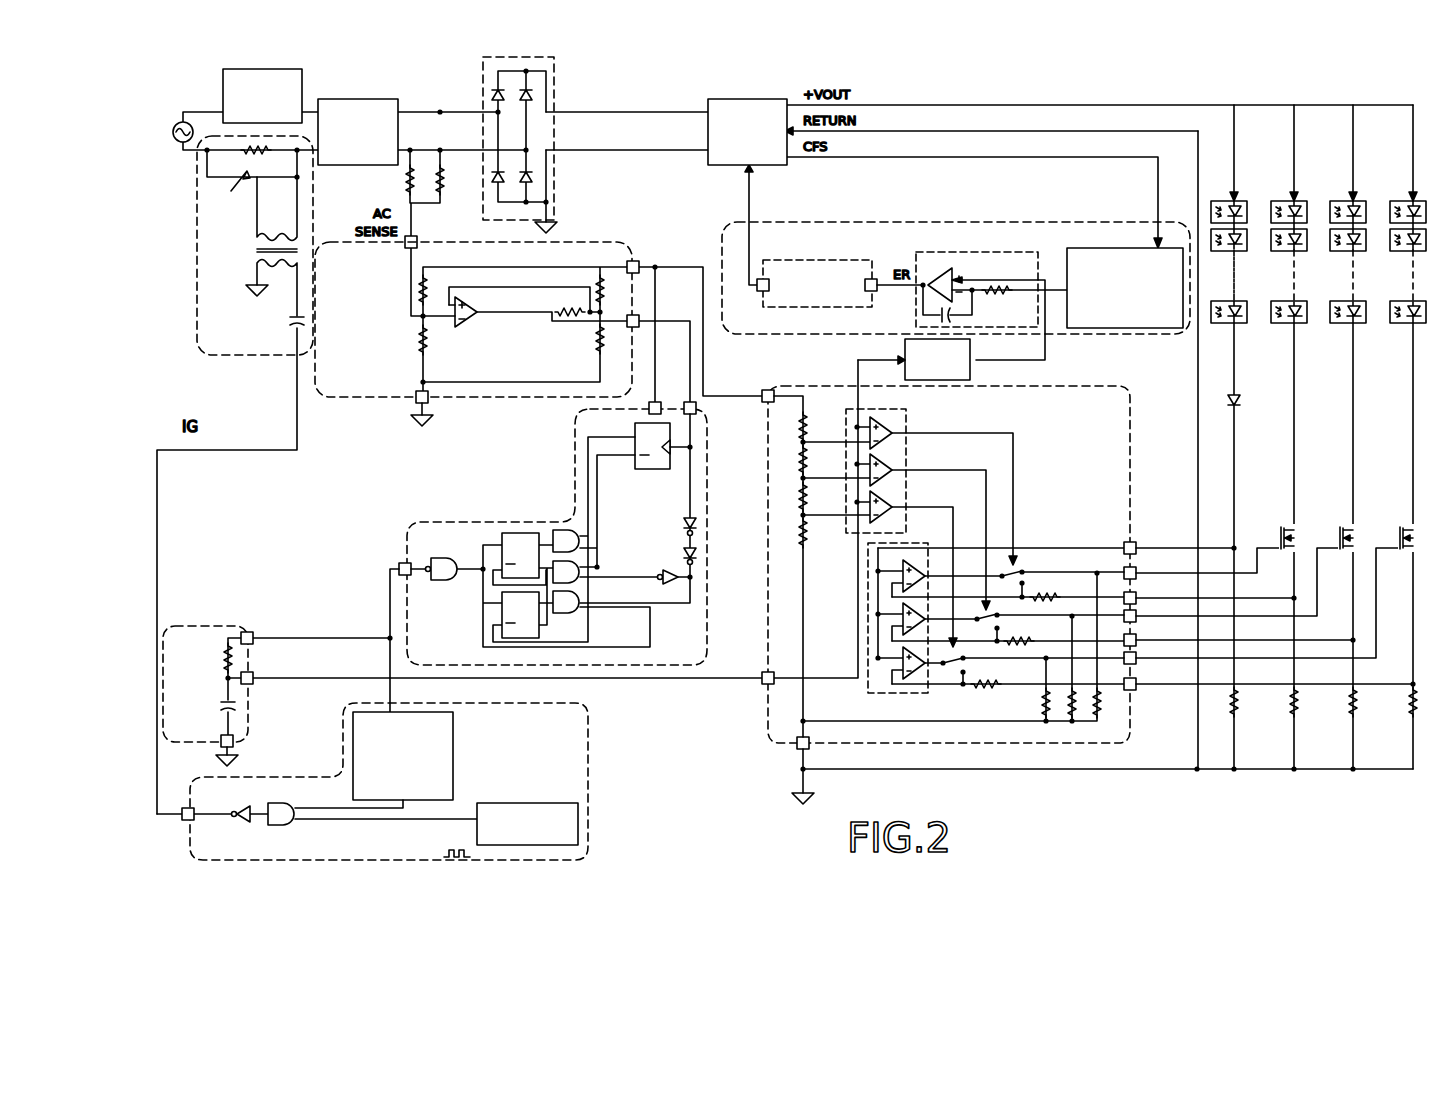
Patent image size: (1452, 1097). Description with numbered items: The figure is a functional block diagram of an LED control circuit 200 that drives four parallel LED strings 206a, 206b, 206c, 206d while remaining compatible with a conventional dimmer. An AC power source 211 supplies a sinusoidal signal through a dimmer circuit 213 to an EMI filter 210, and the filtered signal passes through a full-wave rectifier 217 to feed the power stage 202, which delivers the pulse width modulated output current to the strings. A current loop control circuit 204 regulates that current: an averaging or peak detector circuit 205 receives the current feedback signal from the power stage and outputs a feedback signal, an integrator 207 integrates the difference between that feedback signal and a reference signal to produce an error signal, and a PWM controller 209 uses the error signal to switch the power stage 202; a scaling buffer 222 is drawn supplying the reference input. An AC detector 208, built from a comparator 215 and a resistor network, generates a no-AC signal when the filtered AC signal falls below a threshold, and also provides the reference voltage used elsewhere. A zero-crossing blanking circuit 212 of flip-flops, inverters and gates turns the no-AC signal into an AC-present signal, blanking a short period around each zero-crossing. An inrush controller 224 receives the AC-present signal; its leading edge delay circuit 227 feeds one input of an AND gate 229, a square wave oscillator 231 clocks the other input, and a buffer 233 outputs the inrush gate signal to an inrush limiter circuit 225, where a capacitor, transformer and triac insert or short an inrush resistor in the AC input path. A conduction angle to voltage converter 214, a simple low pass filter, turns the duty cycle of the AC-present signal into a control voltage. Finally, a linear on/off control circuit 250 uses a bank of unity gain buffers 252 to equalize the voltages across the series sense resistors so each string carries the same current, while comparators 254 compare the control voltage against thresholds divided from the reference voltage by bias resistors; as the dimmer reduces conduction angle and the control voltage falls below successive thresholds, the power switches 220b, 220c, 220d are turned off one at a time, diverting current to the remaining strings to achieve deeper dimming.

The LED control circuit 200 is at (1290, 778).
The power stage 202 is at (738, 99).
The current loop control circuit 204 is at (1175, 222).
The averaging or peak detector circuit 205 is at (1120, 334).
The LED string 206a is at (1234, 145).
The LED string 206b is at (1294, 178).
The LED string 206c is at (1353, 130).
The LED string 206d is at (1413, 143).
The integrator 207 is at (1038, 255).
The AC detector 208 is at (387, 397).
The PWM controller 209 is at (795, 307).
The EMI filter 210 is at (340, 99).
The AC power source 211 is at (178, 122).
The zero-crossing blanking circuit 212 is at (408, 530).
The dimmer circuit 213 is at (283, 69).
The conduction angle to voltage converter 214 is at (225, 626).
The comparator 215 is at (465, 300).
The full-wave rectifier 217 is at (554, 60).
The power switch 220b is at (1279, 527).
The power switch 220c is at (1338, 527).
The power switch 220d is at (1398, 527).
The scaling buffer 222 is at (905, 343).
The inrush controller 224 is at (190, 845).
The inrush limiter circuit 225 is at (197, 315).
The leading edge delay circuit 227 is at (453, 747).
The AND gate 229 is at (290, 803).
The square wave oscillator 231 is at (527, 803).
The buffer 233 is at (240, 806).
The linear on/off control circuit 250 is at (1130, 425).
The unity gain buffers 252 is at (895, 693).
The comparators 254 is at (906, 425).